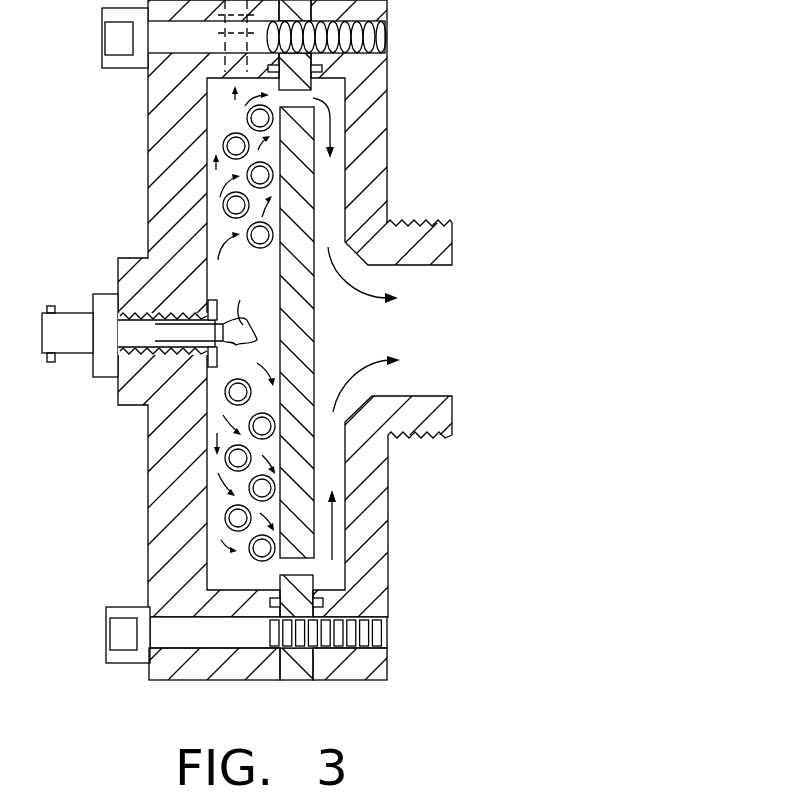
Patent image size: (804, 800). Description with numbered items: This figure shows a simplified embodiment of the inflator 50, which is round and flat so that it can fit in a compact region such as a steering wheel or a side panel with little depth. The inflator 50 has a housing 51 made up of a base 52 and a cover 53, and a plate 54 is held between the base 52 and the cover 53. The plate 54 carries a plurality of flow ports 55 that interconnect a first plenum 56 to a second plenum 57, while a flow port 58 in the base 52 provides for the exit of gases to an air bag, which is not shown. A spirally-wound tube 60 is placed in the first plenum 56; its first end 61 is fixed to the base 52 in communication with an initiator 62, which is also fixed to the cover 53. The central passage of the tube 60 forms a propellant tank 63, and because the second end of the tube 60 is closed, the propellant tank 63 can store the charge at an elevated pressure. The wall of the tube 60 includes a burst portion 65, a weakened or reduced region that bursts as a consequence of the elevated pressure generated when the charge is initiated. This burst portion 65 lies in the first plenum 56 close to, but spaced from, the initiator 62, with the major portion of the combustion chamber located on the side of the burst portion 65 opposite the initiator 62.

The inflator 50 is at (126, 516).
The housing 51 is at (405, 558).
The base 52 is at (388, 658).
The cover 53 is at (149, 677).
The plate 54 is at (303, 682).
The flow ports 55 is at (322, 573).
The first plenum 56 is at (233, 573).
The second plenum 57 is at (327, 465).
The flow port 58 is at (437, 267).
The spirally-wound tube 60 is at (225, 141).
The first end 61 is at (173, 312).
The initiator 62 is at (73, 356).
The propellant tank 63 is at (222, 203).
The burst portion 65 is at (247, 362).